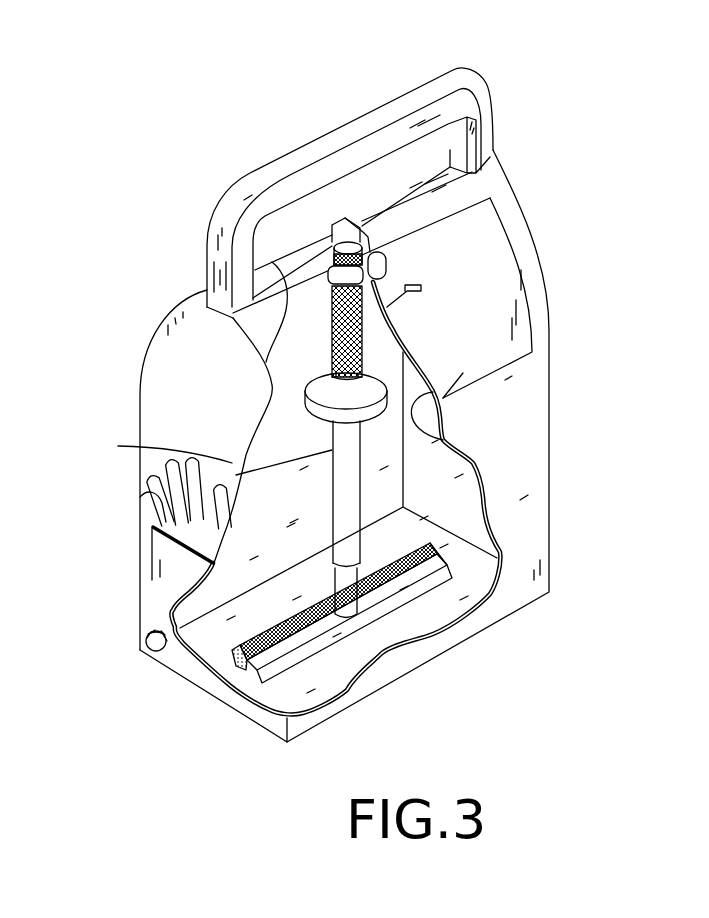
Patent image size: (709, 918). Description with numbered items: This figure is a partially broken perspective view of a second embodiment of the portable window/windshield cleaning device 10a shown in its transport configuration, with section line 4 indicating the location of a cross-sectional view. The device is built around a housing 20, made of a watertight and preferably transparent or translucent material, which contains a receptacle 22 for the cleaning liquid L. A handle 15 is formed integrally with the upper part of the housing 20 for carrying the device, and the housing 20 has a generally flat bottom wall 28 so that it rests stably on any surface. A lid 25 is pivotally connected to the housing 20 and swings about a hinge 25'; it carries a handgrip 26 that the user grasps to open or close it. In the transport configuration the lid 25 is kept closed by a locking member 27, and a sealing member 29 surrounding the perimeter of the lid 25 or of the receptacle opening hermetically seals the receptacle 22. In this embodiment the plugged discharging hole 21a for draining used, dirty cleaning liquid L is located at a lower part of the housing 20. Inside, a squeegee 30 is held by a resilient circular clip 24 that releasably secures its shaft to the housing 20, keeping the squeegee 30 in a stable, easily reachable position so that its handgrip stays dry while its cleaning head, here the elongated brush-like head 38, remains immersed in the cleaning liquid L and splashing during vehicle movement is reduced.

The cleaning apparatus 10a is at (565, 102).
The handle 15 is at (372, 108).
The housing 20 is at (172, 345).
The drain knob 21a is at (147, 632).
The receptacle 22 is at (552, 352).
The resilient circular clip 24 is at (334, 243).
The lid 25 is at (528, 396).
The hinge 25' is at (458, 357).
The handgrip 26 is at (390, 306).
The locking member 27 is at (387, 270).
The flat bottom wall 28 is at (222, 702).
The sealing member 29 is at (445, 438).
The squeegee 30 is at (332, 342).
The rod with collar 38 is at (323, 495).
The cleaning liquid L is at (214, 454).
The section line 4- 4 is at (133, 369).